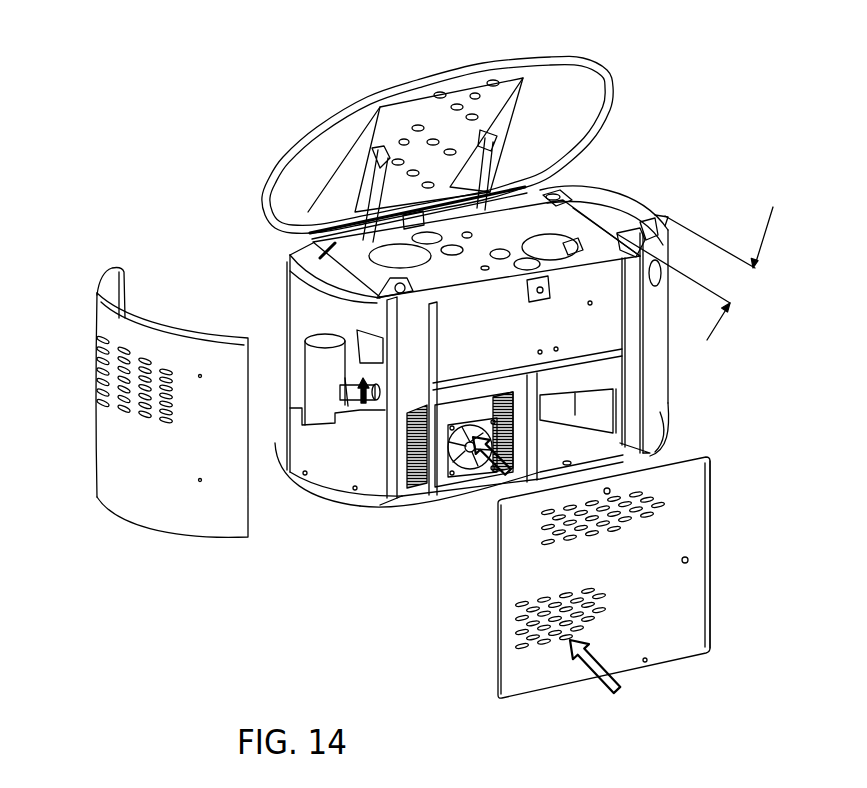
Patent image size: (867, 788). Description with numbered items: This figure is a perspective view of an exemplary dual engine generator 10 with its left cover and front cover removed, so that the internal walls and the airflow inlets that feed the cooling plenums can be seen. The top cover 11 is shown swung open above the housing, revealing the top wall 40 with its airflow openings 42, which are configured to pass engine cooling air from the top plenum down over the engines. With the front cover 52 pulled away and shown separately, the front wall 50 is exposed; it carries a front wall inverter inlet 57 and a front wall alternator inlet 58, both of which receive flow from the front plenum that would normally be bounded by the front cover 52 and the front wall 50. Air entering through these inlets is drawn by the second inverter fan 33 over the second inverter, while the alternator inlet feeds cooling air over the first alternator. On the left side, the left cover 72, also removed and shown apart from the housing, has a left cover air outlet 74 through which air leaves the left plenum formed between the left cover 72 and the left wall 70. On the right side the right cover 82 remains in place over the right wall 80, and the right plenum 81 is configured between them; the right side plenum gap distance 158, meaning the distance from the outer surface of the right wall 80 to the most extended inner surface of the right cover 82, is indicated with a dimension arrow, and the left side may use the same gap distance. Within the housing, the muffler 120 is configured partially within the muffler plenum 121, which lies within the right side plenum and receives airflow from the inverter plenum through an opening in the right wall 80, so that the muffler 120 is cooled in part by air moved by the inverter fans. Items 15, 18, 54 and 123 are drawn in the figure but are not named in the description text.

The dual engine generator 10 is at (191, 139).
The top cover 11 is at (580, 57).
The rear cover panel edge 15 is at (697, 527).
The frame 18 is at (667, 389).
The second inverter fan 33 is at (398, 497).
The top wall 40 is at (557, 210).
The airflow openings 42 is at (568, 248).
The front wall 50 is at (597, 326).
The front cover 52 is at (698, 588).
The ventilation louvers 54 is at (496, 398).
The front wall inverter inlet 57 is at (453, 412).
The front wall alternator inlet 58 is at (667, 408).
The left wall 70 is at (297, 299).
The left cover 72 is at (98, 296).
The left cover air outlet 74 is at (98, 382).
The right wall 80 is at (637, 247).
The right plenum 81 is at (660, 220).
The right cover 82 is at (647, 233).
The muffler 120 is at (317, 363).
The muffler plenum 121 is at (308, 448).
The pipe fitting 123 is at (368, 415).
The right side plenum gap distance 158 is at (695, 265).